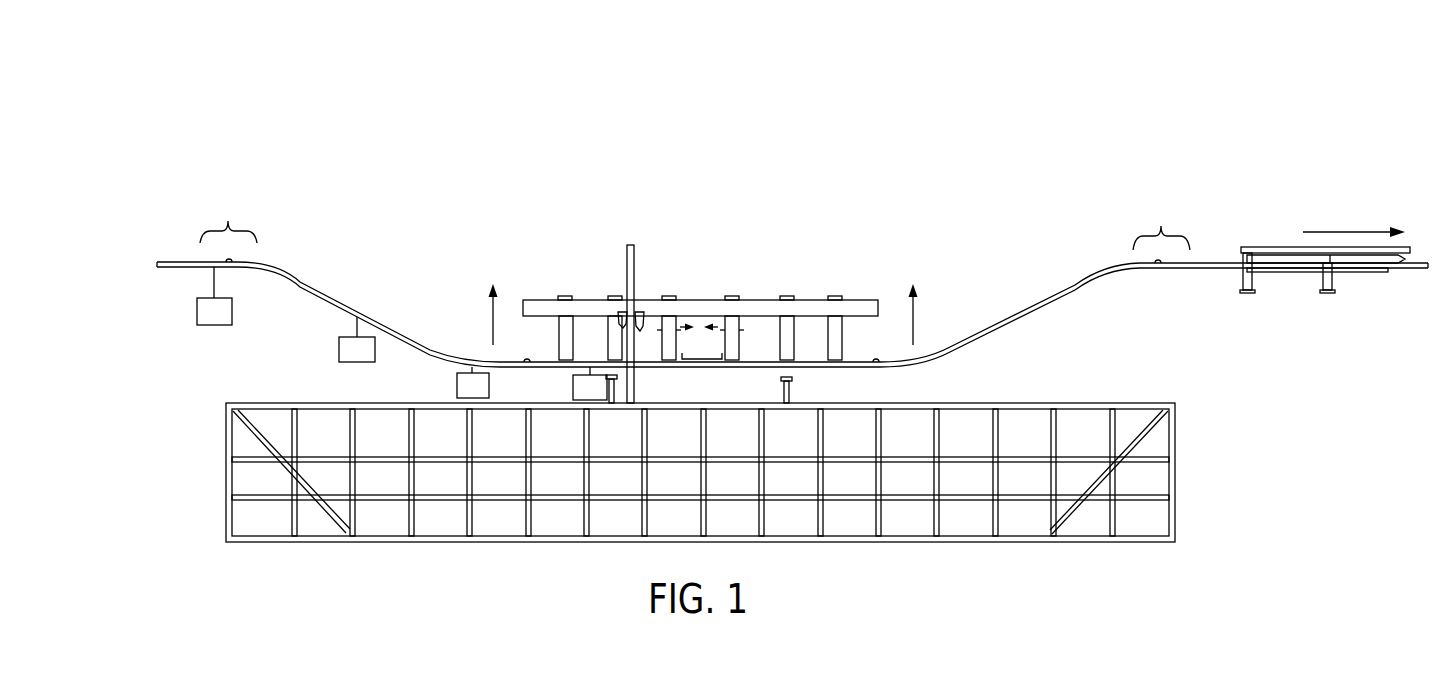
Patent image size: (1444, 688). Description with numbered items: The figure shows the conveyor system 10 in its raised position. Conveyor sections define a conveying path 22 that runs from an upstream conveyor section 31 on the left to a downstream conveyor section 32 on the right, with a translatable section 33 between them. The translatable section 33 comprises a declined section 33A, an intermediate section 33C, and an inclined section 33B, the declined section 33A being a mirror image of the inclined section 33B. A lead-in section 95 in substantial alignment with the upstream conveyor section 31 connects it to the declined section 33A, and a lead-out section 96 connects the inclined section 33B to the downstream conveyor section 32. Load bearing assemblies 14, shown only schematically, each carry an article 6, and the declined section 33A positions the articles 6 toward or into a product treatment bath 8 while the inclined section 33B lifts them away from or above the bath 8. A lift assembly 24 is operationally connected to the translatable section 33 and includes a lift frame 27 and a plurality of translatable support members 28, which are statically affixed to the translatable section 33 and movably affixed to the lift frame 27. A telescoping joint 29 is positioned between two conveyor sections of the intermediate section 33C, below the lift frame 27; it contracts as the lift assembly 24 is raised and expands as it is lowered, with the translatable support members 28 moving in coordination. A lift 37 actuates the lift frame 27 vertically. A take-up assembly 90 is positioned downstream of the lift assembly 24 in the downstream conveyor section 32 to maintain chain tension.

The conveyor system 10 is at (784, 283).
The upstream conveyor section 31 is at (165, 236).
The lead-in section 95 is at (228, 218).
The conveying path 22 is at (688, 305).
The declined section 33A is at (438, 300).
The load bearing assembly 14 is at (215, 277).
The article 6 is at (402, 349).
The lift 37 is at (632, 245).
The translatable support member 28 is at (609, 340).
The telescoping joint 29 is at (700, 348).
The lift frame 27 is at (808, 322).
The lift assembly 24 is at (703, 290).
The intermediate section 33C is at (673, 385).
The translatable section 33 is at (784, 274).
The inclined section 33B is at (1072, 318).
The lead-out section 96 is at (1161, 224).
The downstream conveyor section 32 is at (1231, 225).
The take-up assembly 90 is at (1364, 292).
The product treatment bath 8 is at (1197, 459).